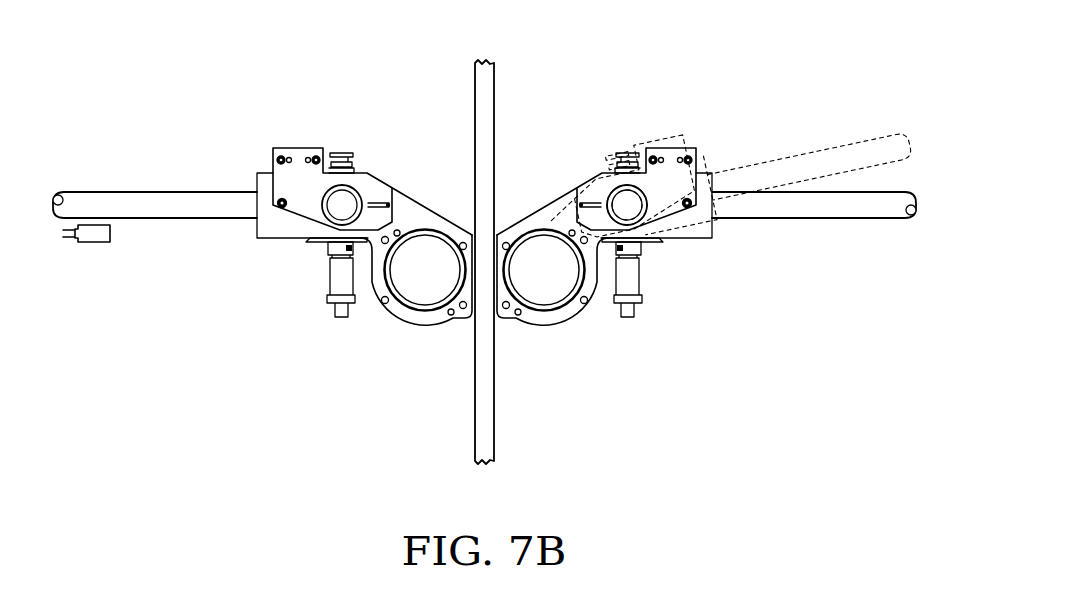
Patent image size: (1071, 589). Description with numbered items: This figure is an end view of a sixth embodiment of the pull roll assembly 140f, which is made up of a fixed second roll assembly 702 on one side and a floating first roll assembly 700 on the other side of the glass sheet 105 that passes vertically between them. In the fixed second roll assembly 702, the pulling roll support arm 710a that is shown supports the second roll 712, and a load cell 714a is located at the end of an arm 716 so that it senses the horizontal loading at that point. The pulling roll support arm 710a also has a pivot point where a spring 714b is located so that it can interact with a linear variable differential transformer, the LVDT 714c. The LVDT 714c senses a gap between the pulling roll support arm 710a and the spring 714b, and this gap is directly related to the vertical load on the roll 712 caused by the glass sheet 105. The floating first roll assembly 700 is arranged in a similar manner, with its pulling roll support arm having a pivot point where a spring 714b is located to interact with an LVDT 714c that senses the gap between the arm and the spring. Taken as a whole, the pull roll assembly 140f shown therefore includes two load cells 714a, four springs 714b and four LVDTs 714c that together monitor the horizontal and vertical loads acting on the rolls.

The glass sheet 105 is at (473, 413).
The pull roll assembly 140f is at (752, 52).
The first roll assembly 700 is at (725, 133).
The second roll assembly 702 is at (245, 138).
The pulling roll support arm 710a is at (443, 218).
The second roll 712 is at (423, 305).
The load cell 714a is at (95, 243).
The spring 714b is at (318, 240).
The linear variable differential transformer 714c is at (327, 298).
The arm 716 is at (173, 191).